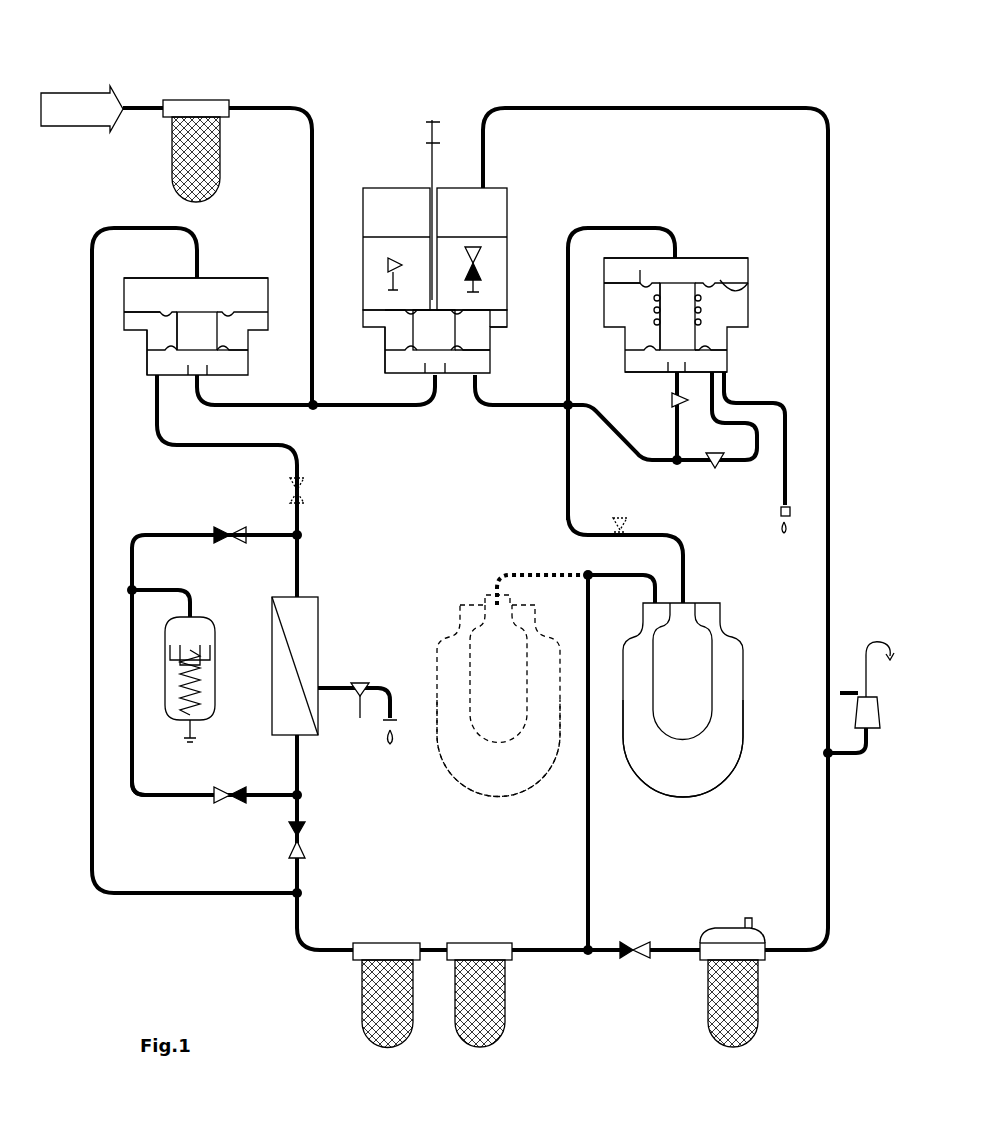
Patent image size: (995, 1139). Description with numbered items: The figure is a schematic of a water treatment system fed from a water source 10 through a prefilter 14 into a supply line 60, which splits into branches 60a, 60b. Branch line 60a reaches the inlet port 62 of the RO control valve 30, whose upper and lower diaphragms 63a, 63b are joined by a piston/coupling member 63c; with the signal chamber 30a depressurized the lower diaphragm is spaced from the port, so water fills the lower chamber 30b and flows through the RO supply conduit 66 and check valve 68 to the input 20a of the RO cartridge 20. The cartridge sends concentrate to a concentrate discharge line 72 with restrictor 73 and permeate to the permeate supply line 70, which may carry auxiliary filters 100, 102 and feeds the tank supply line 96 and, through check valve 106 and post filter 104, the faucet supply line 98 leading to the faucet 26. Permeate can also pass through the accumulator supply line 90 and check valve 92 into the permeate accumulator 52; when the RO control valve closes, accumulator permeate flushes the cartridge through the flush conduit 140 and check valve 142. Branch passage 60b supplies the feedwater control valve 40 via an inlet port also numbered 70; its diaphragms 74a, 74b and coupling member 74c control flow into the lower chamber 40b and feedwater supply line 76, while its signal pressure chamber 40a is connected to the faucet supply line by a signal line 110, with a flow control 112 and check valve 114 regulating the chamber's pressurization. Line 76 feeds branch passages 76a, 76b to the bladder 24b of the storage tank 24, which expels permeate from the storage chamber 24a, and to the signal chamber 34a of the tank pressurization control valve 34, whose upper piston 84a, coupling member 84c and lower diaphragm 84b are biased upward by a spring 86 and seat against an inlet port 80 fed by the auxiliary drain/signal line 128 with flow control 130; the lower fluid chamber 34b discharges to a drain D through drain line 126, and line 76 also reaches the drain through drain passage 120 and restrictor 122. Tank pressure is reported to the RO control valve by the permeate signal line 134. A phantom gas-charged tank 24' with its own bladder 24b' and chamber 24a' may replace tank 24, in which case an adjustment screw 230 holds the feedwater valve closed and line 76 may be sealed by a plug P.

The water source 10 is at (79, 92).
The prefilter 14 is at (212, 90).
The supply line 60 is at (320, 144).
The adjustment screw 230 is at (438, 133).
The signal line 110 is at (727, 105).
The feedwater control valve 40 is at (498, 180).
The flow control 112 is at (397, 262).
The check valve 114 is at (474, 245).
The signal pressure chamber 40a is at (500, 262).
The spring 86 is at (640, 270).
The tank pressurization control valve 34 is at (722, 218).
The signal chamber 34a is at (740, 268).
The upper piston 84a is at (745, 284).
The coupling member 84c is at (680, 313).
The lower diaphragm 84b is at (722, 350).
The lower fluid chamber 34b is at (722, 365).
The drain line 126 is at (787, 437).
The drain D is at (800, 512).
The RO control valve 30 is at (240, 265).
The signal chamber 30a is at (190, 290).
The upper diaphragm 63a is at (140, 312).
The piston/coupling member 63c is at (207, 335).
The lower chamber 30b is at (160, 363).
The lower diaphragm 63b is at (210, 372).
The inlet port 62 is at (212, 376).
The branch line 60a is at (282, 410).
The branch passage 60b is at (397, 410).
The permeate supply line 70 is at (450, 378).
The upper diaphragm 74a is at (497, 312).
The piston/coupling member 74c is at (427, 327).
The lower chamber 40b is at (400, 360).
The lower diaphragm 74b is at (487, 355).
The feedwater supply line 76 is at (523, 412).
The feedwater branch passage 76a is at (572, 350).
The feedwater branch passage 76b is at (568, 508).
The flow control 130 is at (672, 395).
The auxiliary drain/signal line 128 is at (667, 432).
The inlet port 80 is at (692, 378).
The drain passage 120 is at (695, 465).
The flow restrictor 122 is at (720, 466).
The plug P is at (612, 516).
The permeate signal line 134 is at (92, 455).
The RO supply conduit 66 is at (192, 450).
The check valve 142 is at (228, 530).
The check valve 68 is at (308, 495).
The input 20a is at (326, 706).
The flush conduit 140 is at (130, 563).
The permeate accumulator 52 is at (210, 620).
The RO cartridge 20 is at (333, 600).
The concentrate discharge line 72 is at (370, 668).
The flow restrictor 73 is at (358, 700).
The gas pressure biased tank 24' is at (506, 659).
The alternative reservoir inner chamber 24b' is at (498, 674).
The alternative reservoir outer chamber 24a' is at (498, 767).
The storage tank 24 is at (709, 681).
The internal bladder 24b is at (682, 671).
The storage chamber 24a is at (683, 767).
The tank supply line 96 is at (592, 835).
The faucet supply line 98 is at (826, 833).
The faucet 26 is at (884, 765).
The accumulator supply line 90 is at (168, 800).
The check valve 92 is at (237, 805).
The auxiliary filter 100 is at (378, 1030).
The auxiliary filter 102 is at (455, 1038).
The post filter 104 is at (745, 1030).
The check valve 106 is at (635, 945).